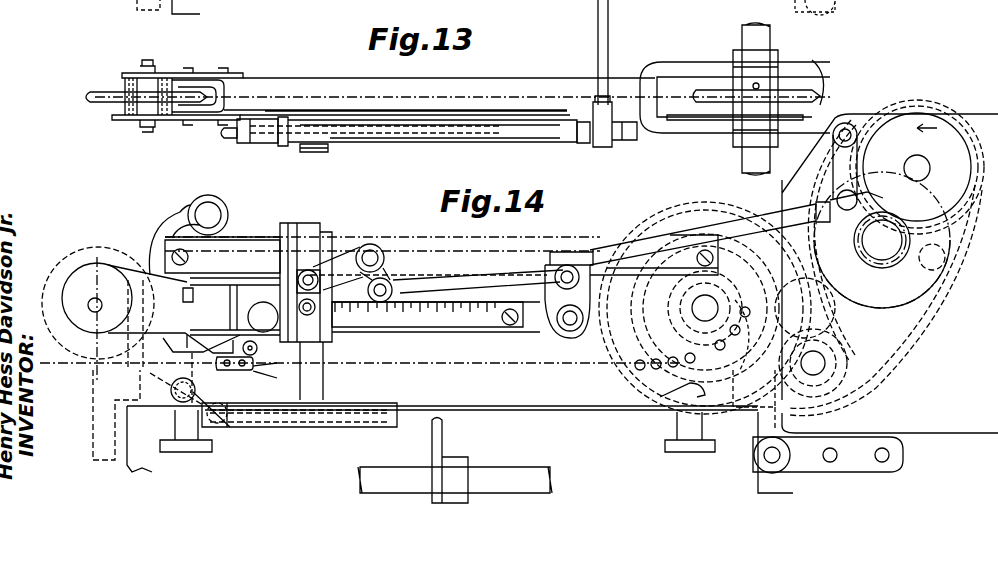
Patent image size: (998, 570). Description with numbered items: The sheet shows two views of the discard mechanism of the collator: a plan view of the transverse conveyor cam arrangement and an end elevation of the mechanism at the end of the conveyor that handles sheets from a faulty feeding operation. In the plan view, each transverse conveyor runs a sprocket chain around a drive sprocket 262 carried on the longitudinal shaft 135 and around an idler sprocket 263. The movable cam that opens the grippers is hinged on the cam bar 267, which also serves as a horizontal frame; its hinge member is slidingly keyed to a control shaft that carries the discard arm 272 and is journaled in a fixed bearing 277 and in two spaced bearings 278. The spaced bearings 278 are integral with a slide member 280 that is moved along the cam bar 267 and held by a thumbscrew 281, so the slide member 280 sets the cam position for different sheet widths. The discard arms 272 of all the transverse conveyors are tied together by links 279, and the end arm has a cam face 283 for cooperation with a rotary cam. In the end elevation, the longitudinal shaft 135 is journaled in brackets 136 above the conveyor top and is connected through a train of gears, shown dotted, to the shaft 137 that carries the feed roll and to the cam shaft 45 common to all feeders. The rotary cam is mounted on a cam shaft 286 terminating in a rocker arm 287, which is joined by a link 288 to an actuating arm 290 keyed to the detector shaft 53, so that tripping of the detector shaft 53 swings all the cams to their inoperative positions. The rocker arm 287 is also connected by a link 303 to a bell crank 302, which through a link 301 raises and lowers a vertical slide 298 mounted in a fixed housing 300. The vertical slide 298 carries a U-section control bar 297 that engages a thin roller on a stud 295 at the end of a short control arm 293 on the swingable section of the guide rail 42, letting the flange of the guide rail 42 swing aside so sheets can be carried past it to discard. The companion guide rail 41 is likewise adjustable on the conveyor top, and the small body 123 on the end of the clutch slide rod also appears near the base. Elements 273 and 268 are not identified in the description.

In FIG. 13, the idler sprocket 263 is at (110, 90).
In FIG. 13, the cam bar 267 is at (503, 92).
In FIG. 13, the adjusting nut 273 is at (262, 143).
In FIG. 13, the spaced bearings 278 is at (235, 142).
In FIG. 13, the slide member 280 is at (300, 118).
In FIG. 13, the thumbscrew 281 is at (330, 150).
In FIG. 13, the fixed bearing 277 is at (580, 143).
In FIG. 13, the links 279 is at (609, 26).
In FIG. 13, the cam face 283 is at (604, 147).
In FIG. 13, the discard arm 272 is at (655, 133).
In FIG. 13, the drive sprocket 262 is at (795, 90).
In FIG. 13, the arm 268 is at (818, 103).
In FIG. 13, the longitudinal shaft 135 is at (755, 157).
In FIG. 14, the longitudinal shaft 135 is at (700, 310).
In FIG. 14, the guide rail 42 is at (98, 353).
In FIG. 14, the fixed housing 300 is at (285, 262).
In FIG. 14, the link 301 is at (332, 348).
In FIG. 14, the vertical slide 298 is at (325, 378).
In FIG. 14, the bell crank 302 is at (350, 250).
In FIG. 14, the link 303 is at (430, 275).
In FIG. 14, the cam shaft 286 is at (548, 338).
In FIG. 14, the rocker arm 287 is at (582, 331).
In FIG. 14, the brackets 136 is at (671, 254).
In FIG. 14, the guide rail 41 is at (660, 390).
In FIG. 14, the link 288 is at (705, 235).
In FIG. 14, the actuating arm 290 is at (832, 160).
In FIG. 14, the detector shaft 53 is at (852, 124).
In FIG. 14, the cam shaft 45 is at (918, 168).
In FIG. 14, the shaft 137 is at (867, 296).
In FIG. 14, the small body 123 is at (703, 432).
In FIG. 14, the control arm 293 is at (197, 397).
In FIG. 14, the stud 295 is at (220, 428).
In FIG. 14, the control bar 297 is at (305, 430).